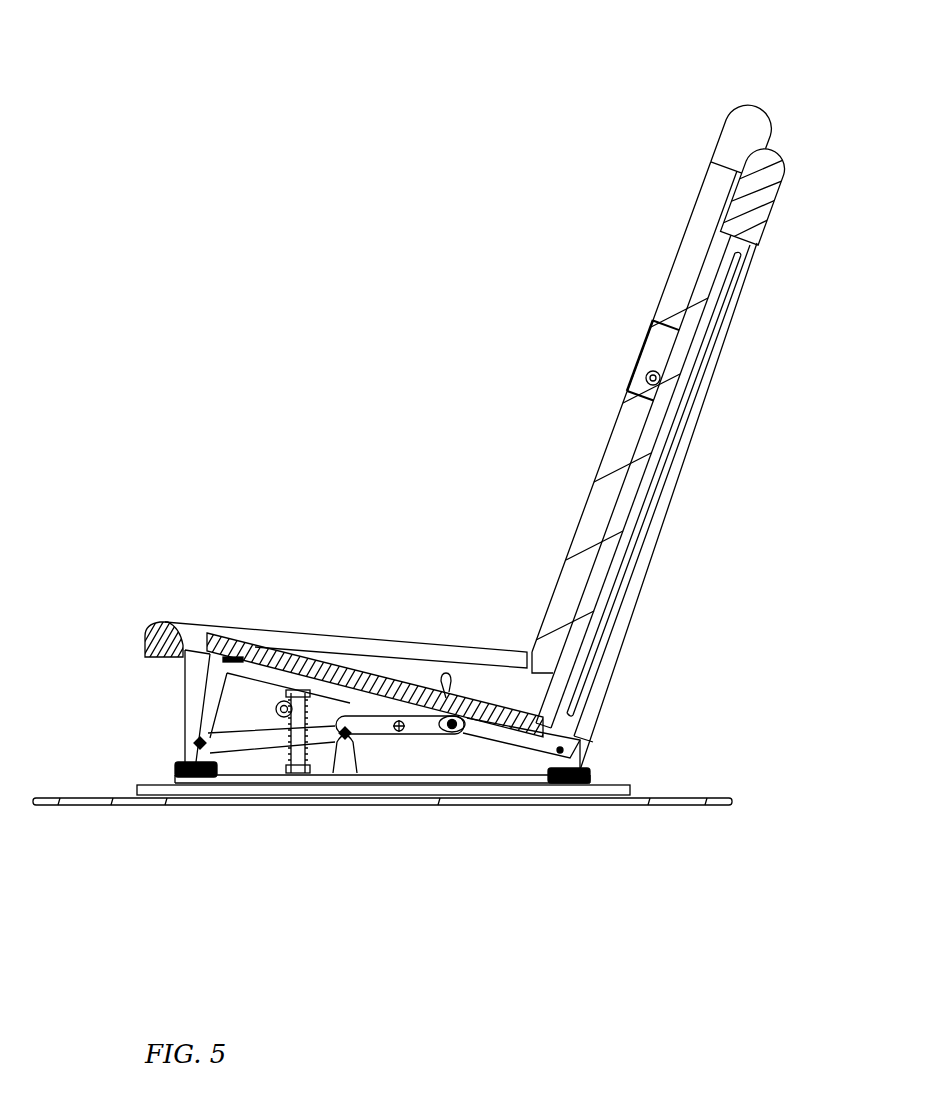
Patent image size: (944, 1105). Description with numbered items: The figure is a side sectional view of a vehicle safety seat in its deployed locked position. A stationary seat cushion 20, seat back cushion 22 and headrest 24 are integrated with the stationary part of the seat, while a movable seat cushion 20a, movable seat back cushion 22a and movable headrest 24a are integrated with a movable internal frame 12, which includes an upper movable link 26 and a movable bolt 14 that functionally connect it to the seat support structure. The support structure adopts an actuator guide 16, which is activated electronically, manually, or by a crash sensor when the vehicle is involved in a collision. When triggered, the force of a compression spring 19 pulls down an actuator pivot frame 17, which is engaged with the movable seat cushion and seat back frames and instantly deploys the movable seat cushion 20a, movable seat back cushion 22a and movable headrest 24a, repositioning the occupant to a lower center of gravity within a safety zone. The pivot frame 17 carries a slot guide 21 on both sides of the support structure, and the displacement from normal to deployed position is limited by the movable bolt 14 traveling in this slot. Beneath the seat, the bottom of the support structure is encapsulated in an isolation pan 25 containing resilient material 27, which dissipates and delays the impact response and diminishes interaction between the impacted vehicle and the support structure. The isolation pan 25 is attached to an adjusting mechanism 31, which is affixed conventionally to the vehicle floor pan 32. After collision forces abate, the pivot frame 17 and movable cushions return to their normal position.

The movable internal frame 12 is at (193, 717).
The movable bolt 14 is at (453, 730).
The actuator guide 16 is at (343, 762).
The actuator pivot frame 17 is at (370, 735).
The spring 19 is at (300, 689).
The stationary seat cushion 20 is at (148, 627).
The movable seat cushion 20a is at (275, 642).
The slot guide 21 is at (448, 677).
The seat back cushion 22 is at (605, 453).
The movable seat back cushion 22a is at (705, 260).
The headrest 24 is at (769, 102).
The movable headrest 24a is at (786, 149).
The isolation pan 25 is at (592, 767).
The upper movable link 26 is at (652, 371).
The resilient material 27 is at (590, 775).
The adjusting mechanism 31 is at (627, 790).
The vehicle floor pan 32 is at (718, 807).